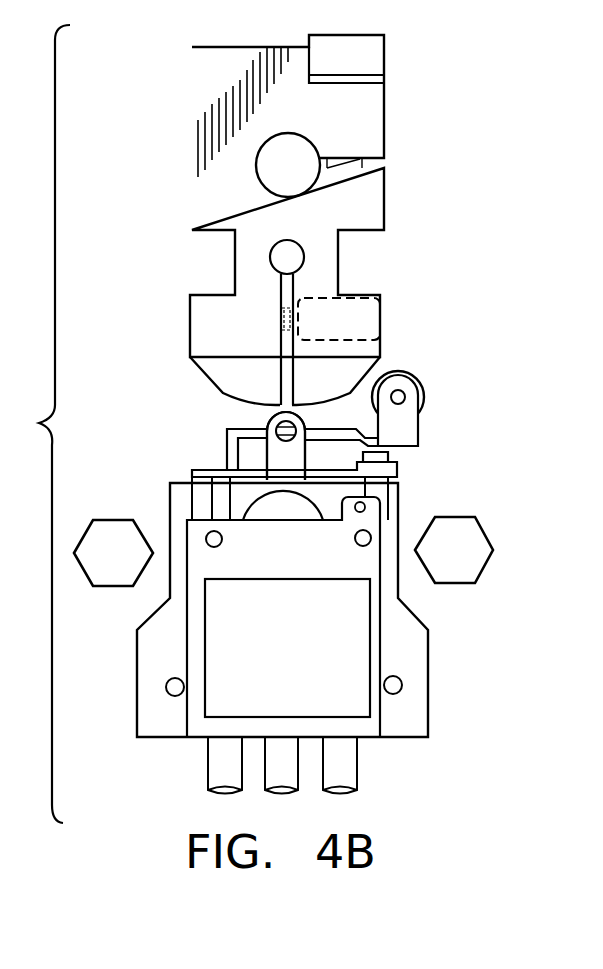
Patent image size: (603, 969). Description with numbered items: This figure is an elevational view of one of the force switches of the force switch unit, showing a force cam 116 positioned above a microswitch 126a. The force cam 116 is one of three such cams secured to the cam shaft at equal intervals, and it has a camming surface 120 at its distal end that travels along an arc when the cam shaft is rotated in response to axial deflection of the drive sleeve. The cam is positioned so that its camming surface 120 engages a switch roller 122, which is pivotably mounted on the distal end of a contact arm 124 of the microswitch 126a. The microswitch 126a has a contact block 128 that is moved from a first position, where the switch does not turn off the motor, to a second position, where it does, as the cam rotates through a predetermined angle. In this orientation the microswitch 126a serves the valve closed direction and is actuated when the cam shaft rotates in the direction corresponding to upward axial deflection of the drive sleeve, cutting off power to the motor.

The force cam 116 is at (396, 200).
The camming surface 120 is at (382, 368).
The switch roller 122 is at (425, 382).
The contact arm 124 is at (238, 428).
The microswitch 126a is at (433, 675).
The contact block 128 is at (281, 510).